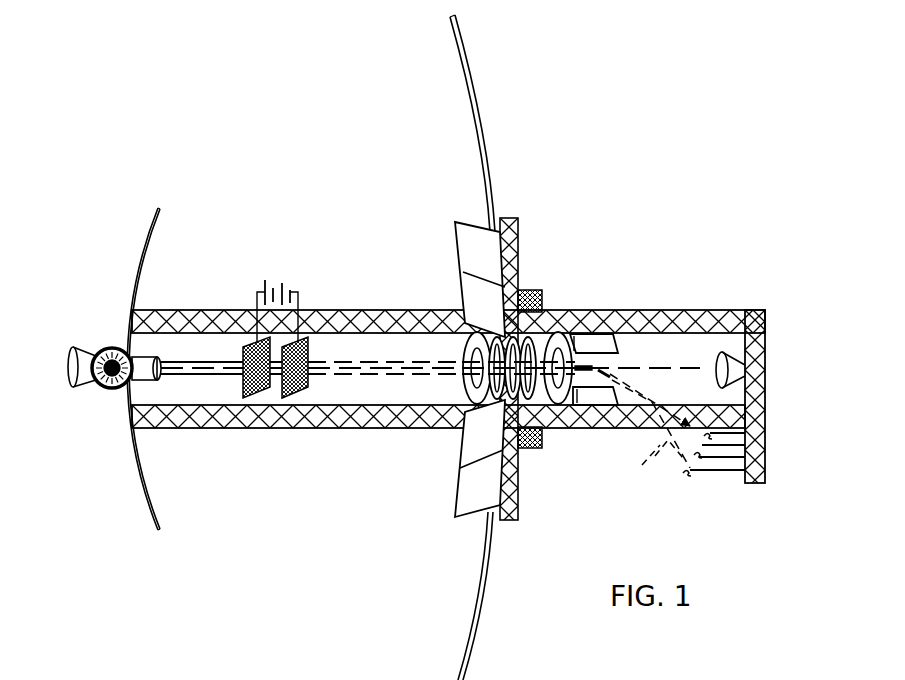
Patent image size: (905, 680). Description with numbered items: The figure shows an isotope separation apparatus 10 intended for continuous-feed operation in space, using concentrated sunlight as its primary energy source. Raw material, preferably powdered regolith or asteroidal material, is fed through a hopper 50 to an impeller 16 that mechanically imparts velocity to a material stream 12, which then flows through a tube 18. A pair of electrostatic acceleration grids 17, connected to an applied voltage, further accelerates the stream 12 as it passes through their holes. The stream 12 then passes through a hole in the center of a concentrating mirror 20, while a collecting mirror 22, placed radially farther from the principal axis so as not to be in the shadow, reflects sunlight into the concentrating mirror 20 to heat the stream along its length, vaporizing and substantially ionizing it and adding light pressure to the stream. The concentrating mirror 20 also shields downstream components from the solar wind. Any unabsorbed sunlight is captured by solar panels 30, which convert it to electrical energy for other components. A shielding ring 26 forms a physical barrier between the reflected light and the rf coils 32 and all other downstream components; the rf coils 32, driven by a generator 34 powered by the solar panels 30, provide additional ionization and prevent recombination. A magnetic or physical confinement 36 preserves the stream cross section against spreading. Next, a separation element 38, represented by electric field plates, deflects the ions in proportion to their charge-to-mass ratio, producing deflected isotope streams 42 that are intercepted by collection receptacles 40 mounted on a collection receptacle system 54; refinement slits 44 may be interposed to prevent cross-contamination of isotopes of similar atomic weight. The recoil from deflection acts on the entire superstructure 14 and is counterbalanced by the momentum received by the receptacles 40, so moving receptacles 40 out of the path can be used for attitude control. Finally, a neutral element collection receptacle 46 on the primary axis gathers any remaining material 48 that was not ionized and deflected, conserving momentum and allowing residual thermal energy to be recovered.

The apparatus 10 is at (608, 200).
The material stream 12 is at (337, 372).
The superstructure 14 is at (373, 312).
The impeller 16 is at (104, 346).
The electrostatic acceleration grids 17 is at (280, 398).
The tube 18 is at (150, 360).
The concentrating mirror 20 is at (143, 228).
The collecting mirror 22 is at (490, 133).
The shielding ring 26 is at (441, 426).
The solar panels 30 is at (452, 240).
The rf coils 32 is at (536, 336).
The generator 34 is at (538, 290).
The confinement 36 is at (592, 338).
The separation element 38 is at (604, 399).
The collection receptacles 40 is at (722, 441).
The isotope streams 42 is at (660, 448).
The refinement slits 44 is at (756, 397).
The neutral element collection receptacle 46 is at (731, 358).
The neutral stream material 48 is at (639, 366).
The hopper 50 is at (85, 382).
The collection receptacle system 54 is at (766, 483).